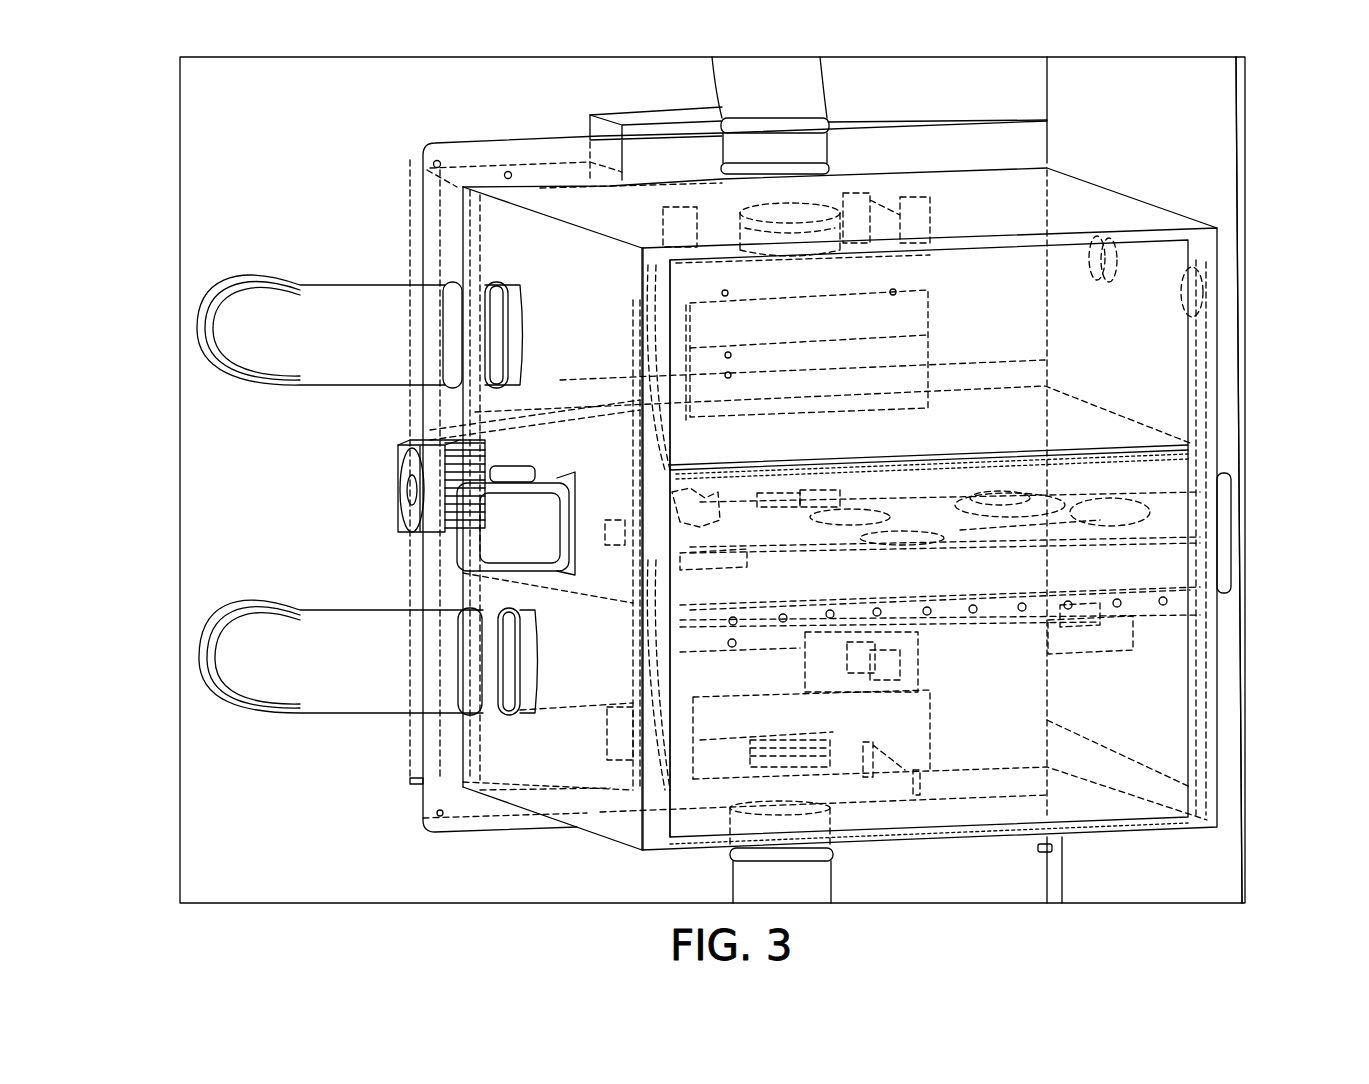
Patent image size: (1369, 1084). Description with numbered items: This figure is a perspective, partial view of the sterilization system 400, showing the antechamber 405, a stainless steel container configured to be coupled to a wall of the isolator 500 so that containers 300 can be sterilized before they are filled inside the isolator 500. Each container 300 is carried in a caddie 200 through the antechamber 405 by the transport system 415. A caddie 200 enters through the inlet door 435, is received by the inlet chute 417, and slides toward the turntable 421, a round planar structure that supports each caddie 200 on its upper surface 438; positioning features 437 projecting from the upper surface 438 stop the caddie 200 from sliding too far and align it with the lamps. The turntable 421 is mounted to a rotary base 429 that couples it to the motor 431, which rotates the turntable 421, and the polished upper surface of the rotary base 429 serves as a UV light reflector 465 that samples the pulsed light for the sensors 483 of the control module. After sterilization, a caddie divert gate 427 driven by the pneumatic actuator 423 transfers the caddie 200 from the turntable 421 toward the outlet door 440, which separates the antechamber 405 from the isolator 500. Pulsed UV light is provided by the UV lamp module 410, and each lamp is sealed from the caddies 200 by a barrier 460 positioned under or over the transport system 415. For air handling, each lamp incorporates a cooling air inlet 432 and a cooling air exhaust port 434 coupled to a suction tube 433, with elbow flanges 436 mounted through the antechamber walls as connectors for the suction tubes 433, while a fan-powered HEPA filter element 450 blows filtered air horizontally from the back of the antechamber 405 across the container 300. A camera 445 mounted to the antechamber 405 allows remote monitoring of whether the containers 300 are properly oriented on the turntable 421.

The sterilization system 400 is at (153, 72).
The antechamber 405 is at (1117, 237).
The isolator 500 is at (1222, 213).
The fan-powered HEPA filter element 450 is at (410, 186).
The cooling air exhaust port 434 is at (640, 248).
The cooling air inlet 432 is at (725, 218).
The pulsed UV lamp module 410 is at (897, 310).
The container 300 is at (778, 490).
The caddie 200 is at (805, 488).
The barrier 460 is at (980, 430).
The caddie divert gate 427 is at (1048, 505).
The outlet door 440 is at (1138, 507).
The turntable 421 is at (985, 536).
The transport system 415 is at (1047, 578).
The pneumatic actuator 423 is at (1110, 638).
The inlet chute 417 is at (611, 530).
The UV light reflector 465 is at (842, 520).
The positioning feature 437 is at (910, 540).
The rotary base 429 is at (852, 575).
The upper surface 438 is at (762, 535).
The motor 431 is at (885, 667).
The suction tube 433 is at (315, 605).
The elbow flange 436 is at (493, 283).
The sensor 483 is at (425, 502).
The camera 445 is at (443, 462).
The inlet door 435 is at (451, 542).